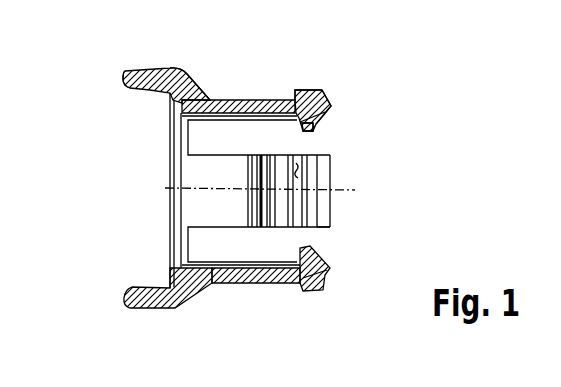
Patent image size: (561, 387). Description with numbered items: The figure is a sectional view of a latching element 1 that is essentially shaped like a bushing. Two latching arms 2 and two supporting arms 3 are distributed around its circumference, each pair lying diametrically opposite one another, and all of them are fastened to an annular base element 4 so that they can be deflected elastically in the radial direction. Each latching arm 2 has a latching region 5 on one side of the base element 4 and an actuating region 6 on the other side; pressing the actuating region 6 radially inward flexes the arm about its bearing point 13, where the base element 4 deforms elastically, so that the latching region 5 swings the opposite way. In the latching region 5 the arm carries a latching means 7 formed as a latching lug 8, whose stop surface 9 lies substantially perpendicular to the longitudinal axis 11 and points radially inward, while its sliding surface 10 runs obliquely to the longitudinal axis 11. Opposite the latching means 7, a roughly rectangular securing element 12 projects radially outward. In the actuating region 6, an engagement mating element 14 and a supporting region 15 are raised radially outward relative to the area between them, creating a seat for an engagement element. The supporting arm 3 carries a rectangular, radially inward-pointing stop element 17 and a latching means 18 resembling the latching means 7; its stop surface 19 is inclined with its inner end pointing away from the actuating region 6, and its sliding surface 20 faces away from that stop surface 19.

The latching element 1 is at (231, 79).
The latching arm 2 is at (268, 105).
The supporting arm 3 is at (197, 214).
The base element 4 is at (181, 135).
The latching region 5 is at (335, 101).
The actuating region 6 is at (139, 60).
The latching means 7 is at (316, 128).
The latching lug 8 is at (307, 127).
The stop surface 9 is at (297, 117).
The sliding surface 10 is at (331, 109).
The longitudinal axis 11 is at (165, 188).
The securing element 12 is at (315, 90).
The bearing point 13 is at (166, 104).
The engagement mating element 14 is at (117, 79).
The supporting region 15 is at (178, 62).
The stop element 17 is at (256, 205).
The latching means 18 is at (329, 222).
The stop surface 19 is at (330, 158).
The sliding surface 20 is at (313, 180).